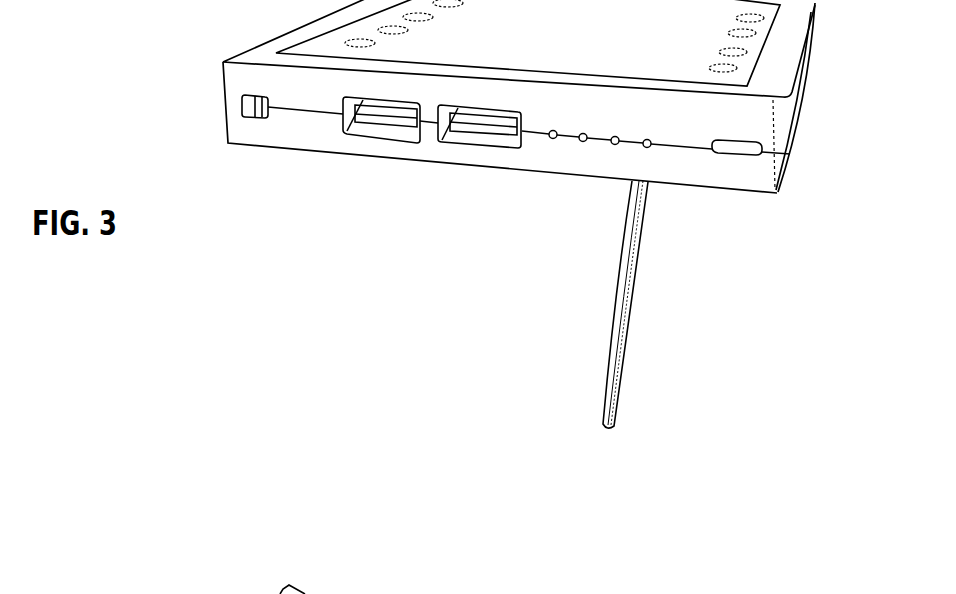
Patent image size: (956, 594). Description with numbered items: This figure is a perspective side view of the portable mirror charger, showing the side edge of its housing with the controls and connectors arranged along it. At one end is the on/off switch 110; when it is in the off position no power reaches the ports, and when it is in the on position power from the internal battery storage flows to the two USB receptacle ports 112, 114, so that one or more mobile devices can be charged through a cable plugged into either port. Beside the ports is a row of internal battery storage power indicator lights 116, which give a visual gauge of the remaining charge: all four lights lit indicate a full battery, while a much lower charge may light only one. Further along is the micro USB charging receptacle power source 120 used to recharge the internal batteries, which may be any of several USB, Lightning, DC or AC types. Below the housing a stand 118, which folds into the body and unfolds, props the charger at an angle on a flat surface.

The on/off switch 110 is at (243, 107).
The USB receptacle port 112 is at (370, 128).
The USB receptacle port 114 is at (473, 128).
The internal battery storage power indicator lights 116 is at (579, 160).
The stand 118 is at (613, 343).
The micro USB charging receptacle power source 120 is at (747, 152).